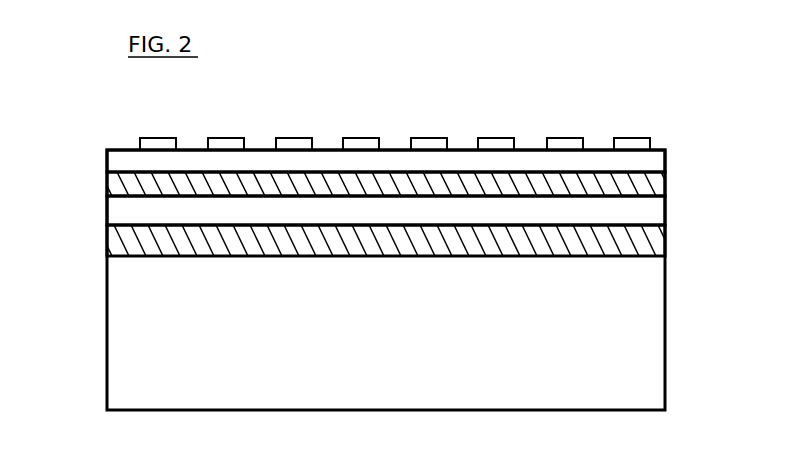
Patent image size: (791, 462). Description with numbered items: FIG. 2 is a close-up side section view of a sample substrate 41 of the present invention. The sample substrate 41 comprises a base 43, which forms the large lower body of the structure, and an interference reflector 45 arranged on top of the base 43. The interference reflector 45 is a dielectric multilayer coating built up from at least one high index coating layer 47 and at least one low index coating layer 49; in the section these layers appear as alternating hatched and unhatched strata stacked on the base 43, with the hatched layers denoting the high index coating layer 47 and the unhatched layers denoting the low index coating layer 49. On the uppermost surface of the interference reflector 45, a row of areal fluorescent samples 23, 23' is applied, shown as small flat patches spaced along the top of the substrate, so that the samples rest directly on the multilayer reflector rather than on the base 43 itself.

The sample substrate 41 is at (565, 77).
The base 43 is at (386, 280).
The interference reflector 45 is at (387, 201).
The high index coating layer 47 is at (647, 242).
The low index coating layer 49 is at (653, 207).
The areal fluorescent sample 23 is at (428, 106).
The areal fluorescent sample 23' is at (493, 109).